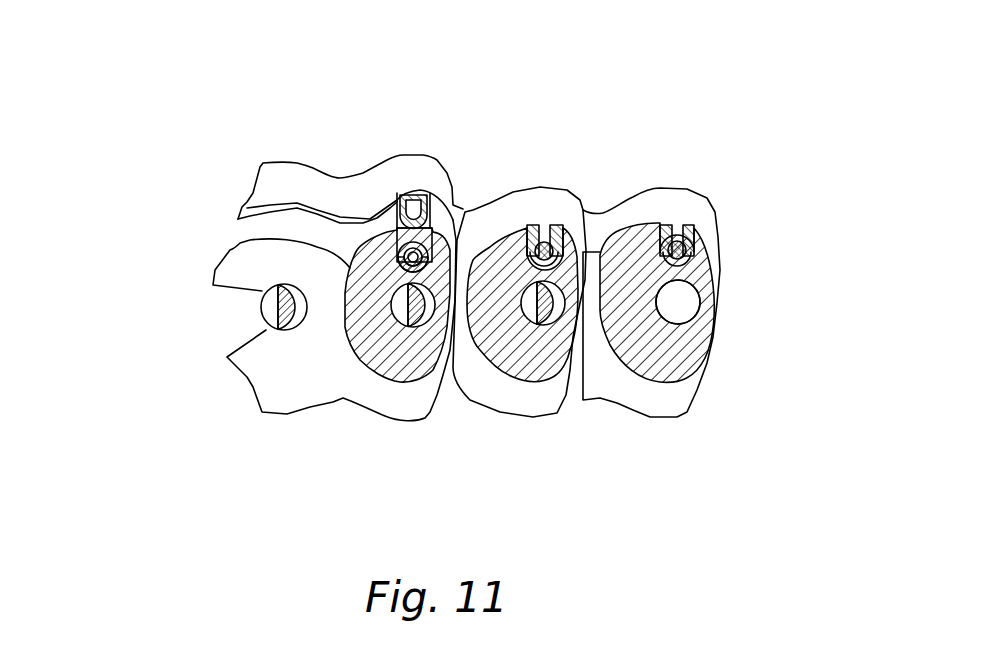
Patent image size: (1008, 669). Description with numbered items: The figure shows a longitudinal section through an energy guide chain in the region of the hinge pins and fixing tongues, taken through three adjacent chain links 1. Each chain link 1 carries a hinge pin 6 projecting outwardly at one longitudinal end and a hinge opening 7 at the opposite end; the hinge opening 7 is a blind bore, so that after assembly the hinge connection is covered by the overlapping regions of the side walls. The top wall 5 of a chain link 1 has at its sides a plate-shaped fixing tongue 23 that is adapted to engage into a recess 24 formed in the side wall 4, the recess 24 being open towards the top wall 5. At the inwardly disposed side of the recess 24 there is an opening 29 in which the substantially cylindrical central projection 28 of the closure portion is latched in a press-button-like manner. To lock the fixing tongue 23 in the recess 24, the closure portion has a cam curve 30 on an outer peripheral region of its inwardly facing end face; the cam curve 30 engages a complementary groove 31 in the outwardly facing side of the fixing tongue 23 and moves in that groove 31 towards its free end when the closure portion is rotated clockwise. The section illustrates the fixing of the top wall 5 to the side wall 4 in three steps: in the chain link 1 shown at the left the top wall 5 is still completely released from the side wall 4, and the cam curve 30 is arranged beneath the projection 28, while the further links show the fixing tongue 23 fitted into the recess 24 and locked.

The chain link 1 is at (278, 415).
The side wall 4 is at (607, 368).
The top wall 5 is at (293, 170).
The hinge pin 6 is at (292, 302).
The hinge opening 7 is at (683, 303).
The fixing tongue 23 is at (417, 198).
The recess 24 is at (423, 242).
The central projection 28 is at (412, 252).
The opening 29 is at (409, 257).
The cam curve 30 is at (405, 268).
The groove 31 is at (427, 207).